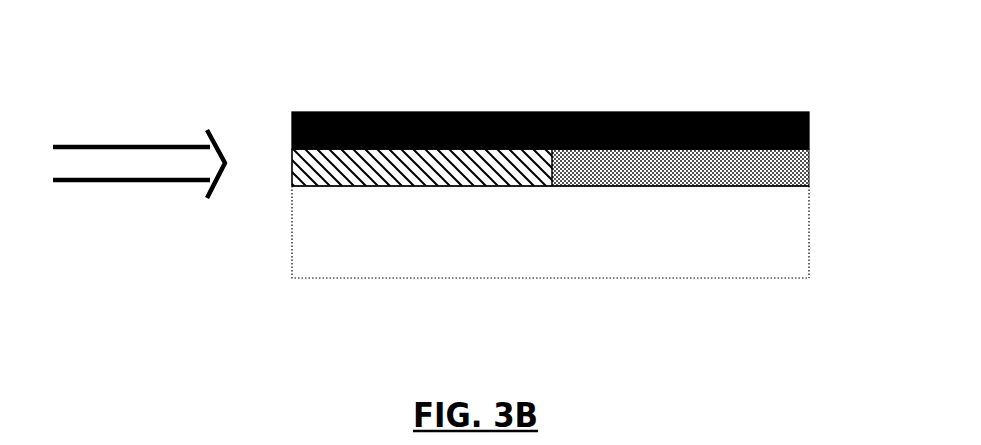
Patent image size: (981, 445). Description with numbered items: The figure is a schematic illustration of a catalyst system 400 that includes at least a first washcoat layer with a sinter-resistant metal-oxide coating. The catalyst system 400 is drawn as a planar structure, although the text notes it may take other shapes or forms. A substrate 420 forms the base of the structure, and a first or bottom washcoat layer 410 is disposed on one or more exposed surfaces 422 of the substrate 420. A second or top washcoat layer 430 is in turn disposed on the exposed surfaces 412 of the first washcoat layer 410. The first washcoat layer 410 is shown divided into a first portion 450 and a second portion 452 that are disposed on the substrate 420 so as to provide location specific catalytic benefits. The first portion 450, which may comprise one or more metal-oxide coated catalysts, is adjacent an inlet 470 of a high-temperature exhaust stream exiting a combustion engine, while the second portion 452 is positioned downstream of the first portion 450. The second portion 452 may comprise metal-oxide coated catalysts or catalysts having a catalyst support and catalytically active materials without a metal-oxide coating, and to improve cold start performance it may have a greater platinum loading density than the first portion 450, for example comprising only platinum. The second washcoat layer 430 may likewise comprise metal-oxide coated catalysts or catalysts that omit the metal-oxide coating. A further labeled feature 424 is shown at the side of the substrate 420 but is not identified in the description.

The catalyst system 400 is at (172, 62).
The inlet 470 is at (72, 146).
The exposed surfaces of the first washcoat layer 412 is at (292, 148).
The first washcoat layer 410 is at (289, 170).
The exposed surfaces of the substrate 422 is at (291, 186).
The second washcoat layer 430 is at (809, 130).
The second portion 452 is at (809, 168).
The substrate edge surface 424 is at (809, 186).
The first portion 450 is at (422, 186).
The substrate 420 is at (550, 278).